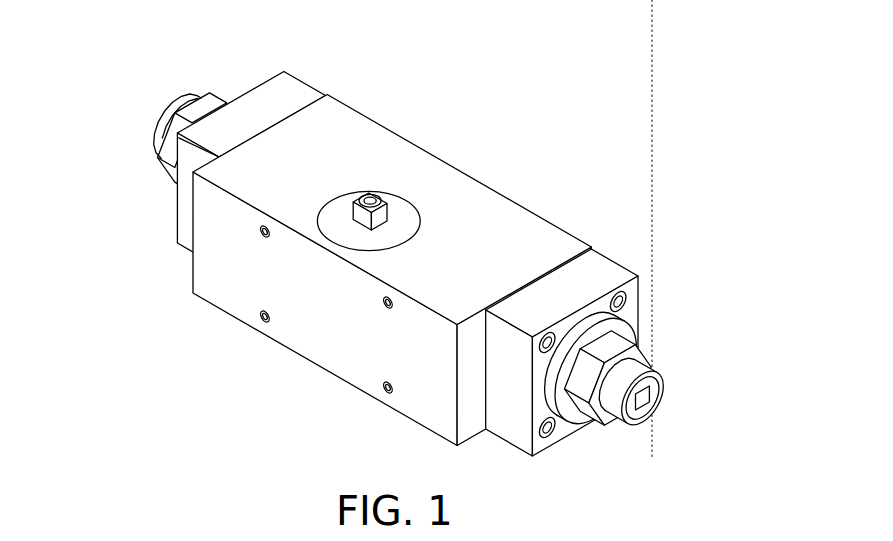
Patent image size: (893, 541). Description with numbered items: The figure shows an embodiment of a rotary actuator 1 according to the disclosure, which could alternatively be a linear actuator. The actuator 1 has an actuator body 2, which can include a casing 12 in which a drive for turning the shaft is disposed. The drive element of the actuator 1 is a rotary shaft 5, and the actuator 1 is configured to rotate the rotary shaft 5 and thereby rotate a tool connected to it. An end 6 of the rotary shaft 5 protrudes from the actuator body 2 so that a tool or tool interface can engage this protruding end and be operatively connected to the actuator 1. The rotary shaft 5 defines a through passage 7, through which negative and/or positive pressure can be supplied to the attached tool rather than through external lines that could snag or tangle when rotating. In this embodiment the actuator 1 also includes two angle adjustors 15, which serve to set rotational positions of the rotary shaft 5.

The rotary actuator 1 is at (567, 34).
The actuator body 2 is at (412, 264).
The rotary shaft 5 is at (393, 131).
The end of rotary shaft 6 is at (334, 141).
The through passage 7 is at (377, 119).
The casing 12 is at (392, 210).
The angle adjustor 15 is at (412, 265).